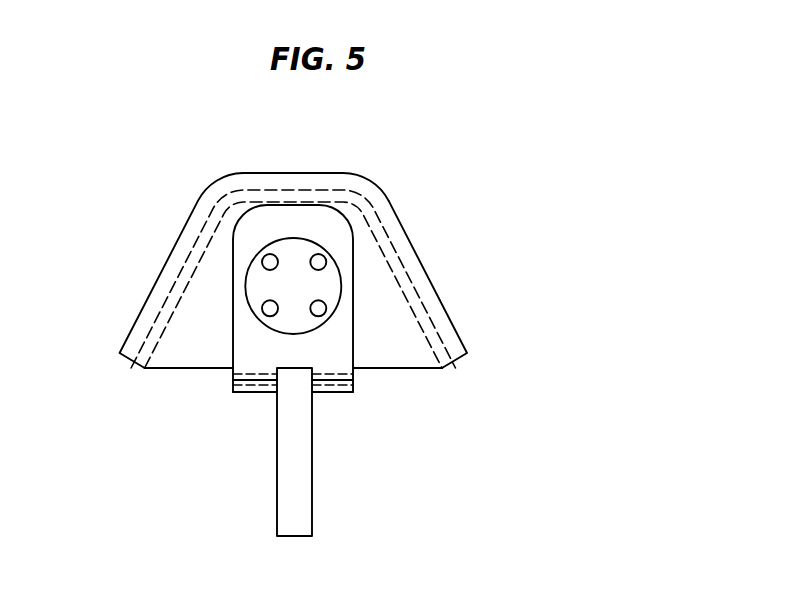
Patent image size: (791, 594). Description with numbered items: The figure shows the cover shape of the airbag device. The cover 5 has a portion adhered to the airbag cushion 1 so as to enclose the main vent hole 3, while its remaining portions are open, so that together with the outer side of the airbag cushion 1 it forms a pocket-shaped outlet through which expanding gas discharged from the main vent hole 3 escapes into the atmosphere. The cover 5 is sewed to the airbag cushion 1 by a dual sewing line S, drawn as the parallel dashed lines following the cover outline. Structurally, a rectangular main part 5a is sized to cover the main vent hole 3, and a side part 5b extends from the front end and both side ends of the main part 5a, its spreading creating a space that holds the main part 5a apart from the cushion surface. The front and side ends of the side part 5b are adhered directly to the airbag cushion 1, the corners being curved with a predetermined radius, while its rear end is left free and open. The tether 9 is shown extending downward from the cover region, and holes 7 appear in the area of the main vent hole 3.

The airbag cushion 1 is at (152, 168).
The main vent hole 3 is at (305, 240).
The cover 5 is at (329, 237).
The main part 5a is at (342, 343).
The side part 5b is at (392, 325).
The fastening holes 7 is at (262, 308).
The tether 9 is at (302, 483).
The dual sewing line S is at (381, 223).